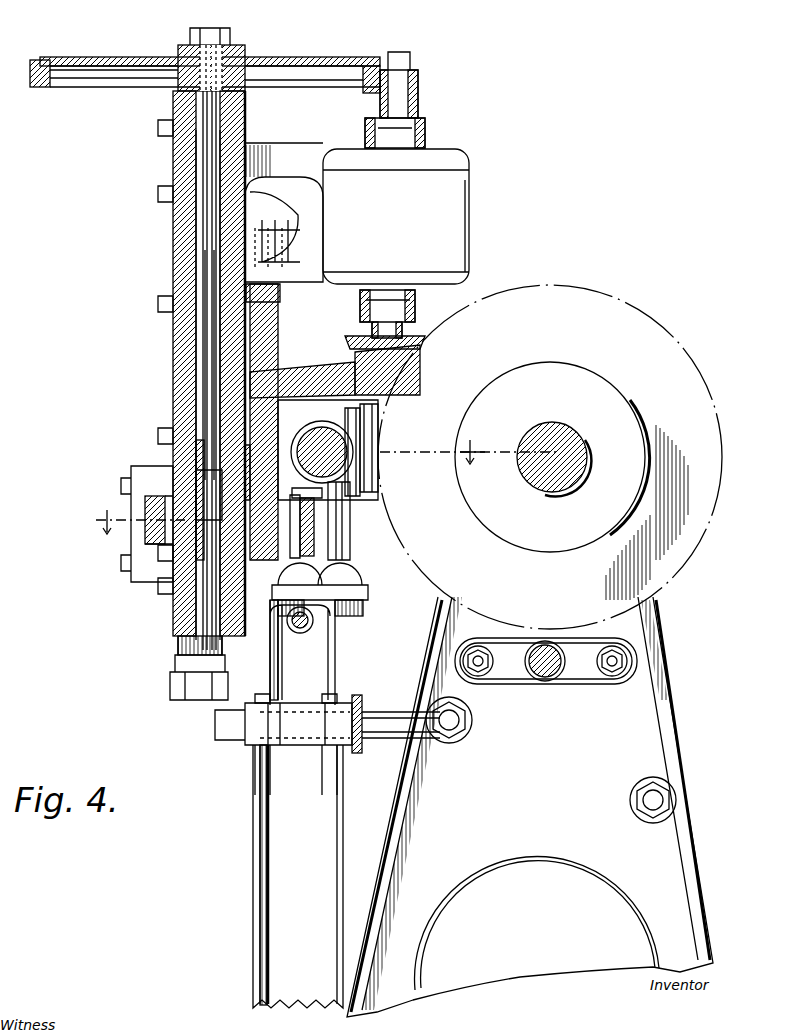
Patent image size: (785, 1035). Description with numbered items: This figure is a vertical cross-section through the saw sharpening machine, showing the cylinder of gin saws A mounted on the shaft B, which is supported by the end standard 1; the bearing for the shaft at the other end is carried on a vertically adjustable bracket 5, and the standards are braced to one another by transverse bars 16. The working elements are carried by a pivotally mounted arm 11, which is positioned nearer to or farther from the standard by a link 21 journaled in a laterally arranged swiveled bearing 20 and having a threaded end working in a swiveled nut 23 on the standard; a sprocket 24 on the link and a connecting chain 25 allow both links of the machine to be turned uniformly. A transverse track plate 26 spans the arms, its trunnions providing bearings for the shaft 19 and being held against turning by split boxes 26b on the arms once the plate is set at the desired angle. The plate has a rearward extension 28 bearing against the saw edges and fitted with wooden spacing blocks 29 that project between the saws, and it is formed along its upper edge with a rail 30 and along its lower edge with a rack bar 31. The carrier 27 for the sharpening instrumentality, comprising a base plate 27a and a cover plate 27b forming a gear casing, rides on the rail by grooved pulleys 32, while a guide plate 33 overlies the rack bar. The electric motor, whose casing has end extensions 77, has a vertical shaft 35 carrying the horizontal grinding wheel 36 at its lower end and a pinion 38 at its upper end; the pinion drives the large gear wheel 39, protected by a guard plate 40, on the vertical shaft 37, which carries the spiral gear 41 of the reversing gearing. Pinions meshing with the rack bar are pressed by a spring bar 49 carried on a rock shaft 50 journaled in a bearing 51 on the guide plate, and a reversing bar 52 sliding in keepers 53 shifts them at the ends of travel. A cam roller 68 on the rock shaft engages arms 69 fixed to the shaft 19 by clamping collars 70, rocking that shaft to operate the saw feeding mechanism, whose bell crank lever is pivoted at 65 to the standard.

The end standard 1 is at (655, 730).
The bracket 5 is at (328, 498).
The arm 11 is at (298, 876).
The transverse bar 16 is at (545, 680).
The shaft 19 is at (310, 430).
The swiveled bearing 20 is at (300, 745).
The link 21 is at (385, 735).
The swiveled nut 23 is at (456, 743).
The sprocket 24 is at (370, 718).
The chain 25 is at (362, 698).
The track plate 26 is at (262, 365).
The split box 26b is at (365, 438).
The carrier 27 is at (173, 308).
The base plate 27a is at (212, 335).
The cover plate 27b is at (186, 378).
The rearward extension 28 is at (345, 362).
The spacing block 29 is at (422, 372).
The rail 30 is at (282, 300).
The rack bar 31 is at (238, 445).
The grooved pulley 32 is at (302, 222).
The guide plate 33 is at (245, 598).
The motor shaft 35 is at (372, 326).
The grinding wheel 36 is at (352, 342).
The vertical shaft 37 is at (204, 398).
The pinion 38 is at (418, 84).
The gear wheel 39 is at (370, 92).
The guard plate 40 is at (300, 72).
The spiral gear 41 is at (165, 548).
The spring bar 49 is at (318, 522).
The rock shaft 50 is at (350, 540).
The bearing 51 is at (340, 563).
The reversing bar 52 is at (146, 508).
The keeper 53 is at (136, 470).
The pivot 65 is at (663, 800).
The cam roller 68 is at (298, 600).
The arm 69 is at (318, 500).
The clamping collar 70 is at (378, 462).
The end extension 77 is at (365, 135).
The gin saw A is at (672, 345).
The shaft B is at (583, 442).